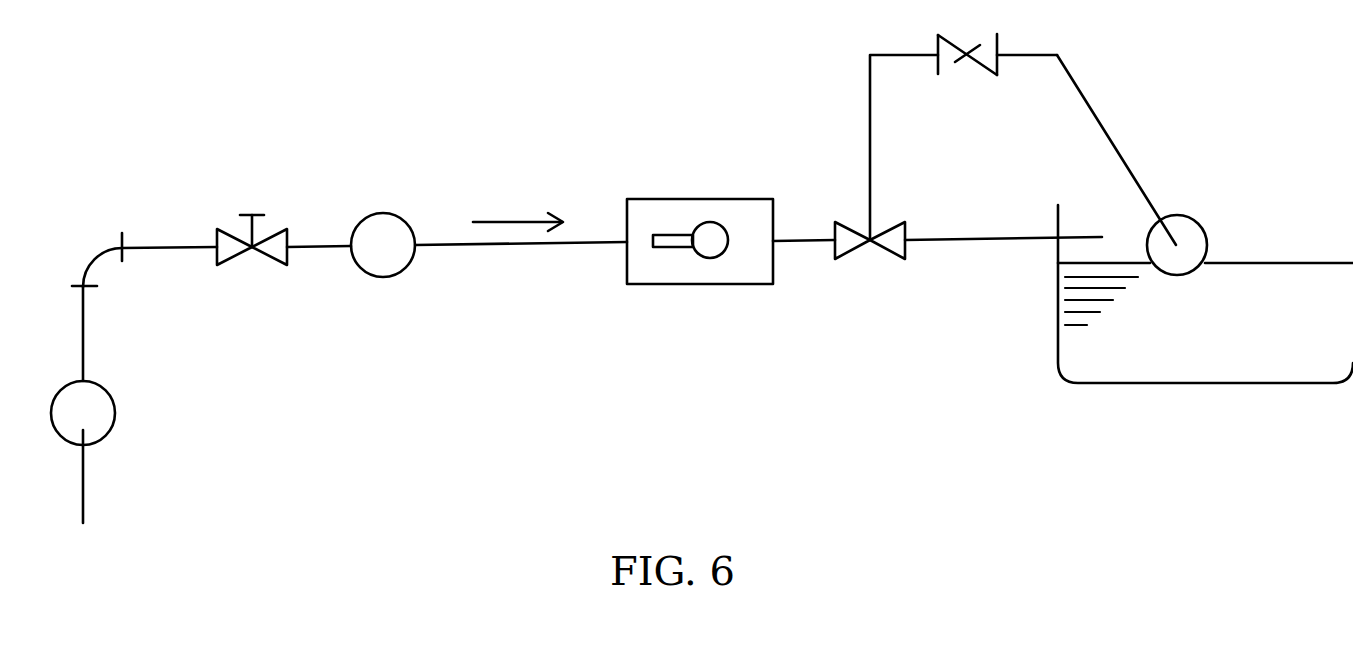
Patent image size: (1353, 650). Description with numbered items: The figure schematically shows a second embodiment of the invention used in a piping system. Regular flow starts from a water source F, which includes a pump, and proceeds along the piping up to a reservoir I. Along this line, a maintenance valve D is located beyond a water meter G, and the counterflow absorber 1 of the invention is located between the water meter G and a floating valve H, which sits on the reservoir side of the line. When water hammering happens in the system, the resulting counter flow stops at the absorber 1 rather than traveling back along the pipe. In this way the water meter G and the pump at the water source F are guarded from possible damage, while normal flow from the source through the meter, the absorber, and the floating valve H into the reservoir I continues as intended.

The water source F is at (116, 413).
The maintenance valve D is at (278, 208).
The water meter G is at (398, 207).
The counterflow absorber 1 is at (723, 188).
The floating valve H is at (898, 202).
The reservoir I is at (1062, 355).